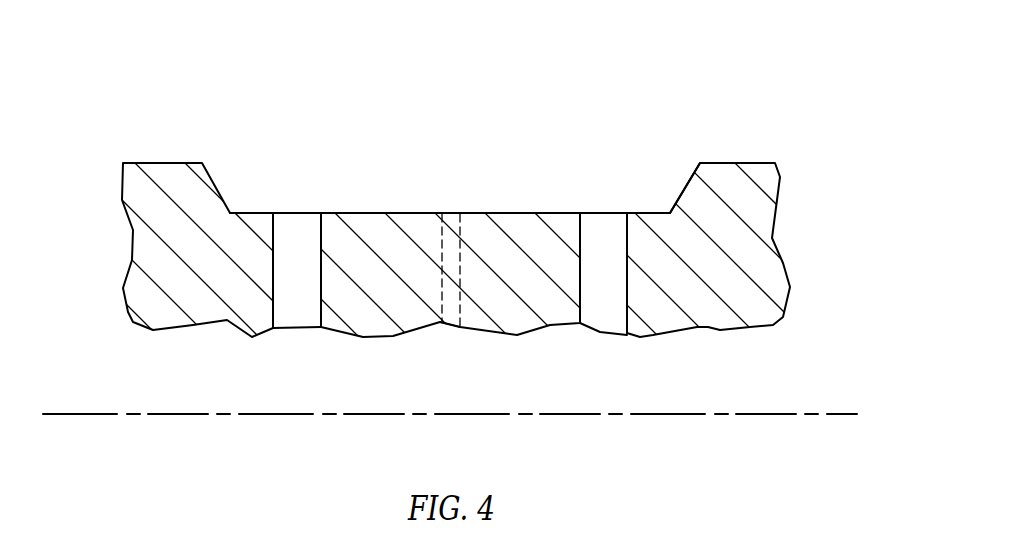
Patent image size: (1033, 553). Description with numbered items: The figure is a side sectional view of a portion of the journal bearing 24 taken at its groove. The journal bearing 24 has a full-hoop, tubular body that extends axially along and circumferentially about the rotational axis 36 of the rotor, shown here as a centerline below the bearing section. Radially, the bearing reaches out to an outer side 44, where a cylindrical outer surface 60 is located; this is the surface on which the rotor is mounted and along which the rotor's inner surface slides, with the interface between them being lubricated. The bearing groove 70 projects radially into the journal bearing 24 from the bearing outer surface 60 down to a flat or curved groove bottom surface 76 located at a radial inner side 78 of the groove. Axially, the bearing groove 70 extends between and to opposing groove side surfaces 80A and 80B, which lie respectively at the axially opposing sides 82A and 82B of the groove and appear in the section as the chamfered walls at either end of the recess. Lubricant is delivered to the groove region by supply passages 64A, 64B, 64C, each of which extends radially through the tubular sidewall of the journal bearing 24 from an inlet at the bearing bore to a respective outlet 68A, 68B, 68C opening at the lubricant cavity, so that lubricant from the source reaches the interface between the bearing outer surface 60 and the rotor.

The journal bearing 24 is at (461, 205).
The rotational axis 36 is at (817, 415).
The outer side 44 is at (716, 215).
The outer surface 60 is at (753, 163).
The supply passage 64A is at (295, 304).
The supply passage 64B is at (595, 305).
The supply passage 64C is at (450, 309).
The outlet 68A is at (297, 213).
The outlet 68B is at (610, 213).
The outlet 68C is at (450, 210).
The bearing groove 70 is at (565, 183).
The groove bottom surface 76 is at (450, 235).
The radial inner side 78 is at (510, 213).
The groove side surface 80A is at (197, 219).
The side of bearing groove 82A is at (212, 182).
The groove side surface 80B is at (677, 158).
The side of bearing groove 82B is at (690, 181).